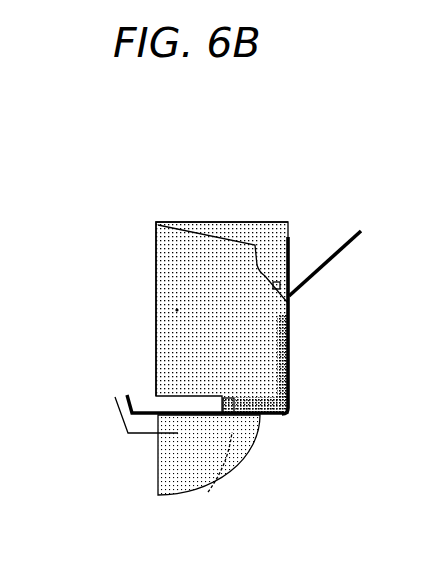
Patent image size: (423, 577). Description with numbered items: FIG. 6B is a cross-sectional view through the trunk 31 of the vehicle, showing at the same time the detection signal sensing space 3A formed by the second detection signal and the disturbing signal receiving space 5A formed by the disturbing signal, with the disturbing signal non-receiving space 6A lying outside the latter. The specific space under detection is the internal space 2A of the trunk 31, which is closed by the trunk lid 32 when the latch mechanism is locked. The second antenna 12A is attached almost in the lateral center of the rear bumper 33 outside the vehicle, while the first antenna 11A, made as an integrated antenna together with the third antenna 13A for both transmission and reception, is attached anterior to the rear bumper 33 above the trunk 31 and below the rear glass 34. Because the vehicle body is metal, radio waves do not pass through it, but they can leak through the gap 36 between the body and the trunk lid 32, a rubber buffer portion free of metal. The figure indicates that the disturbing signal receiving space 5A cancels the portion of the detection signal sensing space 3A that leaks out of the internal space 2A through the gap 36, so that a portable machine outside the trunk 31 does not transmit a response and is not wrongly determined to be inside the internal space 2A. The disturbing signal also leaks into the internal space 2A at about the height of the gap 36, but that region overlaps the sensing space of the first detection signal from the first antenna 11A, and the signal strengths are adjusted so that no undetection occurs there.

The internal space 2A is at (175, 310).
The detection signal sensing space 3A is at (201, 322).
The disturbing signal receiving space 5A is at (223, 386).
The disturbing signal non-receiving space 6A is at (228, 350).
The first antenna 11A is at (290, 270).
The third antenna 13A is at (342, 235).
The second antenna 12A is at (158, 435).
The trunk 31 is at (153, 282).
The trunk lid 32 is at (290, 402).
The rear bumper 33 is at (127, 423).
The rear glass 34 is at (318, 273).
The gap 36 is at (222, 418).